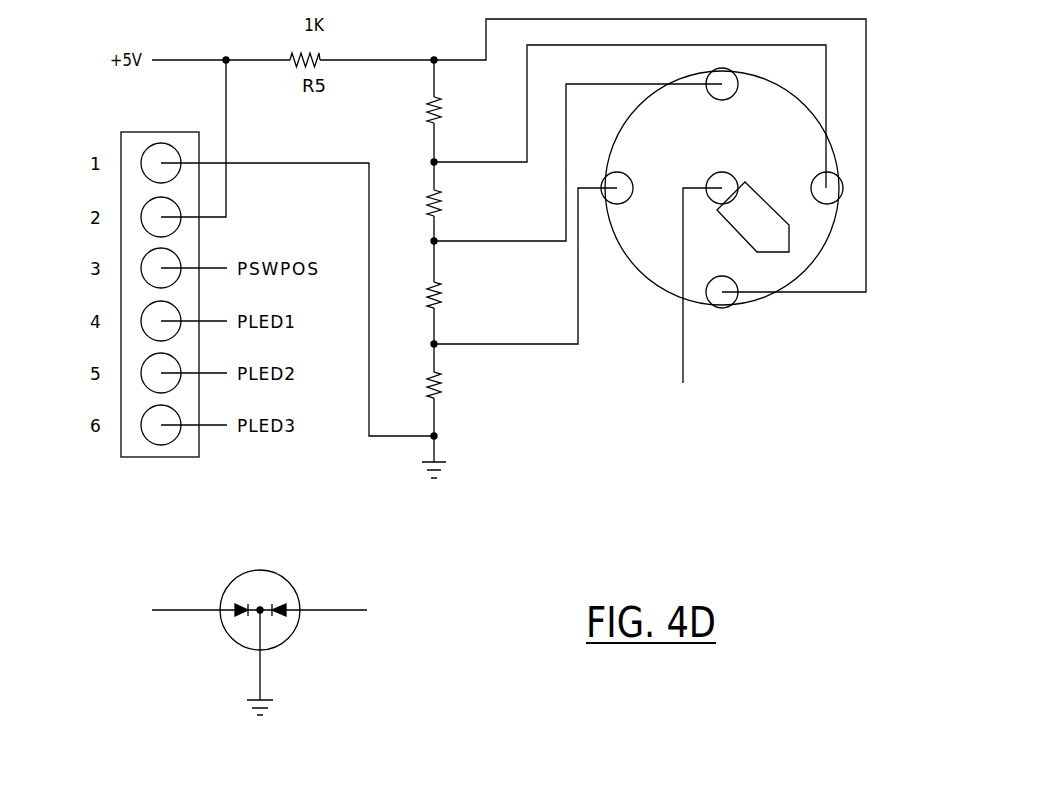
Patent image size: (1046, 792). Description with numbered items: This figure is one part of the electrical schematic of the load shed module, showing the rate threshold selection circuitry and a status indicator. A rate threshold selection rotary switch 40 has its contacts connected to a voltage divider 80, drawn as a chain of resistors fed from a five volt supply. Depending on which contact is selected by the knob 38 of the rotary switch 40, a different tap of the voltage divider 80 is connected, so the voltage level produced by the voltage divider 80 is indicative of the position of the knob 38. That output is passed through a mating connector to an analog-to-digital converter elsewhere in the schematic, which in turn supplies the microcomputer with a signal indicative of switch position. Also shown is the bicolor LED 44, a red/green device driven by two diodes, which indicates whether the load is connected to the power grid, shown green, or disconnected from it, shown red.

The voltage divider 80 is at (420, 88).
The rate threshold selection rotary switch 40 is at (755, 245).
The knob 38 is at (780, 242).
The bicolor LED 44 is at (223, 602).